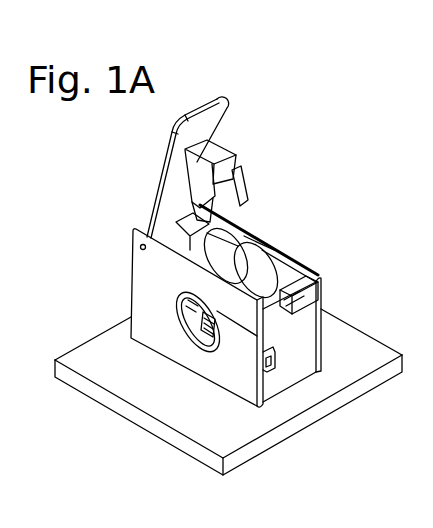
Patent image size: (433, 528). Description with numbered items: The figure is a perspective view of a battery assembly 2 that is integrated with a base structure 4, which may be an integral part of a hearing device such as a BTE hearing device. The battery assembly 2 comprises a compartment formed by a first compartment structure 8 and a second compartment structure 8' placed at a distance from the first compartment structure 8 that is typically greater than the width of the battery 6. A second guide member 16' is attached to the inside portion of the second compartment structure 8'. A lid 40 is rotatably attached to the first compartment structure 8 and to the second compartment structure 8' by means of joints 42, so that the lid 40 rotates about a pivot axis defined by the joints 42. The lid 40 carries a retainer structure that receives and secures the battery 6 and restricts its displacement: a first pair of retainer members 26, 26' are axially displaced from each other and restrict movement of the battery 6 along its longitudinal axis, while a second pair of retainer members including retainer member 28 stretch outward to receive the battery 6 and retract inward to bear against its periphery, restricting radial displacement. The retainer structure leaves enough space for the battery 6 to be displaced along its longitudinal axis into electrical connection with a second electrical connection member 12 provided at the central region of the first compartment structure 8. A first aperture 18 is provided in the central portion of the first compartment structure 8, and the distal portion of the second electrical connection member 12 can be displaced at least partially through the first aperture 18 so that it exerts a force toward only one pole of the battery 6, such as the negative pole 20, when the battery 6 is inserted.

The battery assembly 2 is at (341, 126).
The base structure 4 is at (365, 347).
The battery 6 is at (246, 262).
The first compartment structure 8 is at (169, 318).
The second compartment structure 8' is at (314, 318).
The second electrical connection member 12 is at (205, 336).
The second guide member 16' is at (274, 259).
The first aperture 18 is at (196, 328).
The negative pole 20 is at (184, 326).
The first retainer member 26 is at (166, 186).
The first retainer member 26' is at (265, 169).
The second retainer member 28 is at (232, 152).
The lid 40 is at (196, 108).
The joint 42 is at (138, 248).